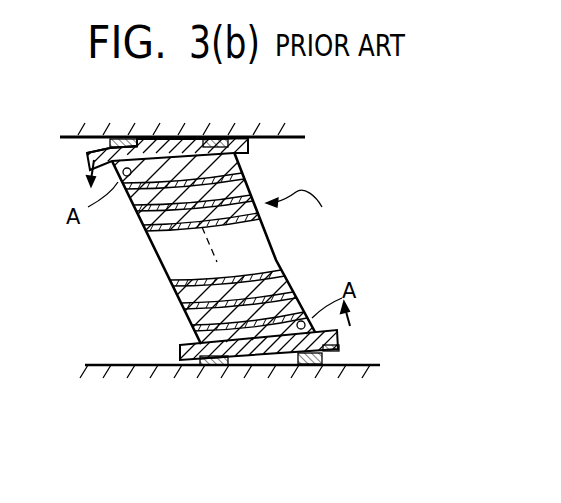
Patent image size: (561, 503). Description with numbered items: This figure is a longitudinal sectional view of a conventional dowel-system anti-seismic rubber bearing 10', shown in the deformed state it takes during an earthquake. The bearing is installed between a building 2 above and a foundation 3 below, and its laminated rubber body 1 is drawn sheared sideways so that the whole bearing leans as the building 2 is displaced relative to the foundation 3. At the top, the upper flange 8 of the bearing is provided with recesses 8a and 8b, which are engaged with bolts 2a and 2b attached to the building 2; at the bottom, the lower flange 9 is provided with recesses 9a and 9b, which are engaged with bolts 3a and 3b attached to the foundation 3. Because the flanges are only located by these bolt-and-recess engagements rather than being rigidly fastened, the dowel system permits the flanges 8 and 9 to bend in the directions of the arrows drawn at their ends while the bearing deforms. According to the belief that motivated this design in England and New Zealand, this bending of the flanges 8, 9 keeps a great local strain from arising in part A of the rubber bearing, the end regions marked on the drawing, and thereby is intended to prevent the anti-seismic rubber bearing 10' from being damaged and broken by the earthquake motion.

The bellows body 1 is at (277, 240).
The building 2 is at (298, 136).
The bolt 2a is at (133, 140).
The bolt 2b is at (216, 139).
The foundation 3 is at (354, 370).
The bolt 3a is at (218, 366).
The bolt 3b is at (304, 366).
The flange 8 is at (250, 151).
The recess 8a is at (114, 148).
The recess 8b is at (236, 140).
The flange 9 is at (339, 338).
The recess 9a is at (238, 366).
The recess 9b is at (336, 355).
The anti-seismic rubber bearing 10' is at (312, 206).